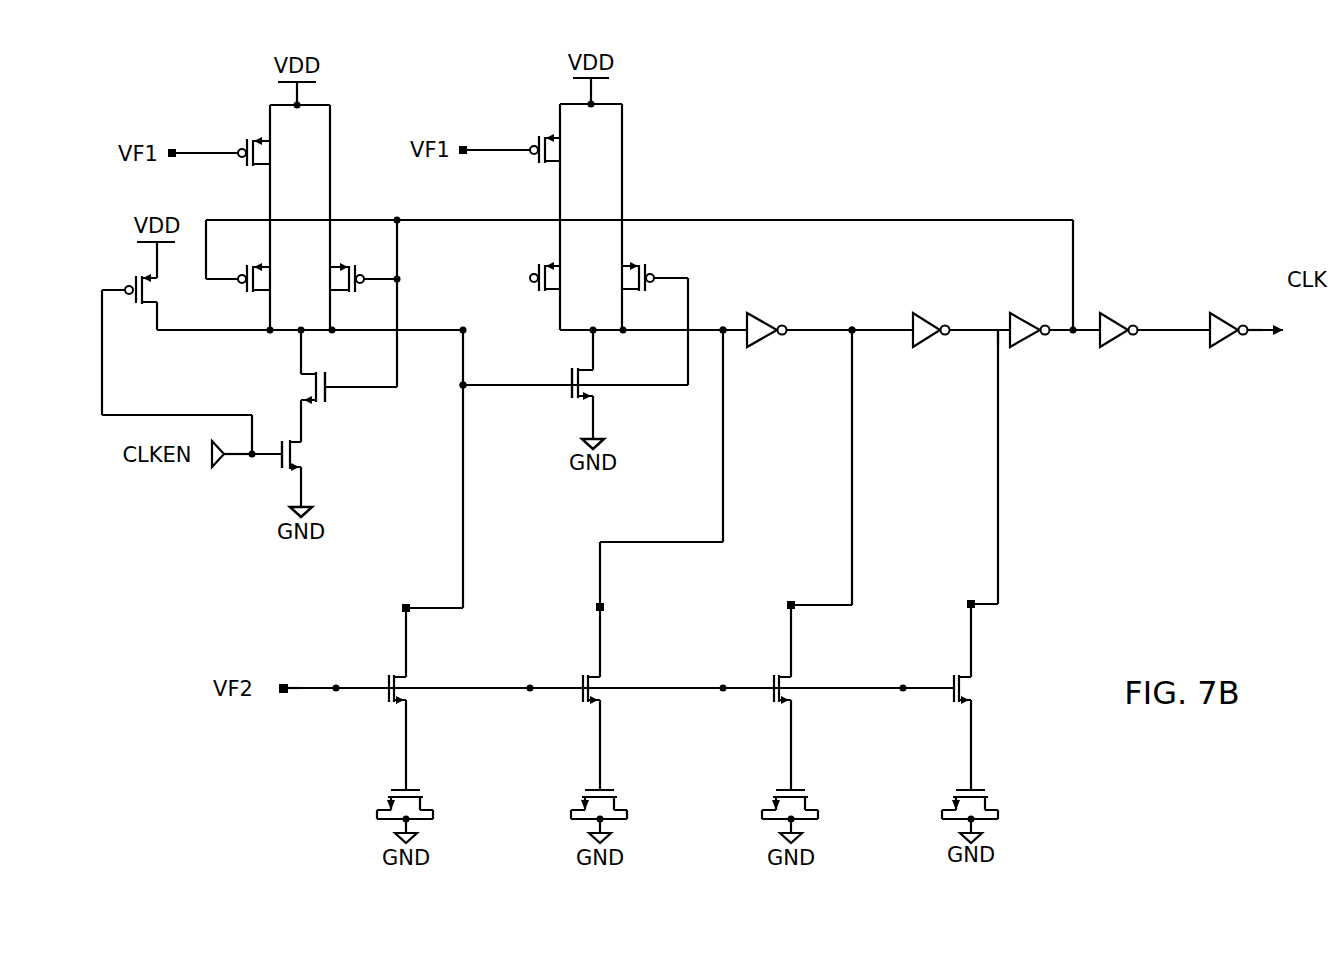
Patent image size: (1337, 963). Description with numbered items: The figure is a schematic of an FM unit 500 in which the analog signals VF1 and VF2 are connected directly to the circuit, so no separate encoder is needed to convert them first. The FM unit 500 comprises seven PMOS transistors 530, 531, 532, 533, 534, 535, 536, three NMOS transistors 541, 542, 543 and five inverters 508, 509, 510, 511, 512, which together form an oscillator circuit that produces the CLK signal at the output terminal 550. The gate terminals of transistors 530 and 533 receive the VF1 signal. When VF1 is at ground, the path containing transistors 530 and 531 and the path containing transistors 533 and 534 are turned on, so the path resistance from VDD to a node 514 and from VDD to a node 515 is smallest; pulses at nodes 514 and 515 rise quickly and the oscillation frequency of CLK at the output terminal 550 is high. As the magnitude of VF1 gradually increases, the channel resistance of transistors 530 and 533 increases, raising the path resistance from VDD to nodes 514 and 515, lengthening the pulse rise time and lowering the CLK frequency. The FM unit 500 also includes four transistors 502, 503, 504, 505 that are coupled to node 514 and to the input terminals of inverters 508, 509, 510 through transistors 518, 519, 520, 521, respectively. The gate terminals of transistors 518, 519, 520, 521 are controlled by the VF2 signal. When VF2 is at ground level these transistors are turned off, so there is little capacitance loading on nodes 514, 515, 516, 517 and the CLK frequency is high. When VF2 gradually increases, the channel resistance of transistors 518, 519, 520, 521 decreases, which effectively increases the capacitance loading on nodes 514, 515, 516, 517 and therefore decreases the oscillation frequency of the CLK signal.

The FM unit 500 is at (332, 757).
The transistor 502 is at (413, 789).
The transistor 503 is at (607, 789).
The transistor 504 is at (798, 789).
The transistor 505 is at (978, 789).
The inverter 508 is at (762, 318).
The inverter 509 is at (925, 318).
The inverter 510 is at (1023, 315).
The inverter 511 is at (1115, 317).
The inverter 512 is at (1223, 317).
The node 514 is at (460, 387).
The node 515 is at (733, 335).
The node 516 is at (860, 334).
The node 517 is at (1004, 337).
The transistor 518 is at (383, 680).
The transistor 519 is at (578, 680).
The transistor 520 is at (770, 680).
The transistor 521 is at (947, 678).
The PMOS transistor 530 is at (247, 144).
The PMOS transistor 531 is at (247, 269).
The PMOS transistor 532 is at (356, 269).
The PMOS transistor 533 is at (538, 142).
The PMOS transistor 534 is at (538, 267).
The PMOS transistor 535 is at (652, 267).
The PMOS transistor 536 is at (133, 283).
The NMOS transistor 541 is at (327, 393).
The NMOS transistor 542 is at (280, 463).
The NMOS transistor 543 is at (570, 390).
The output terminal 550 is at (1253, 337).